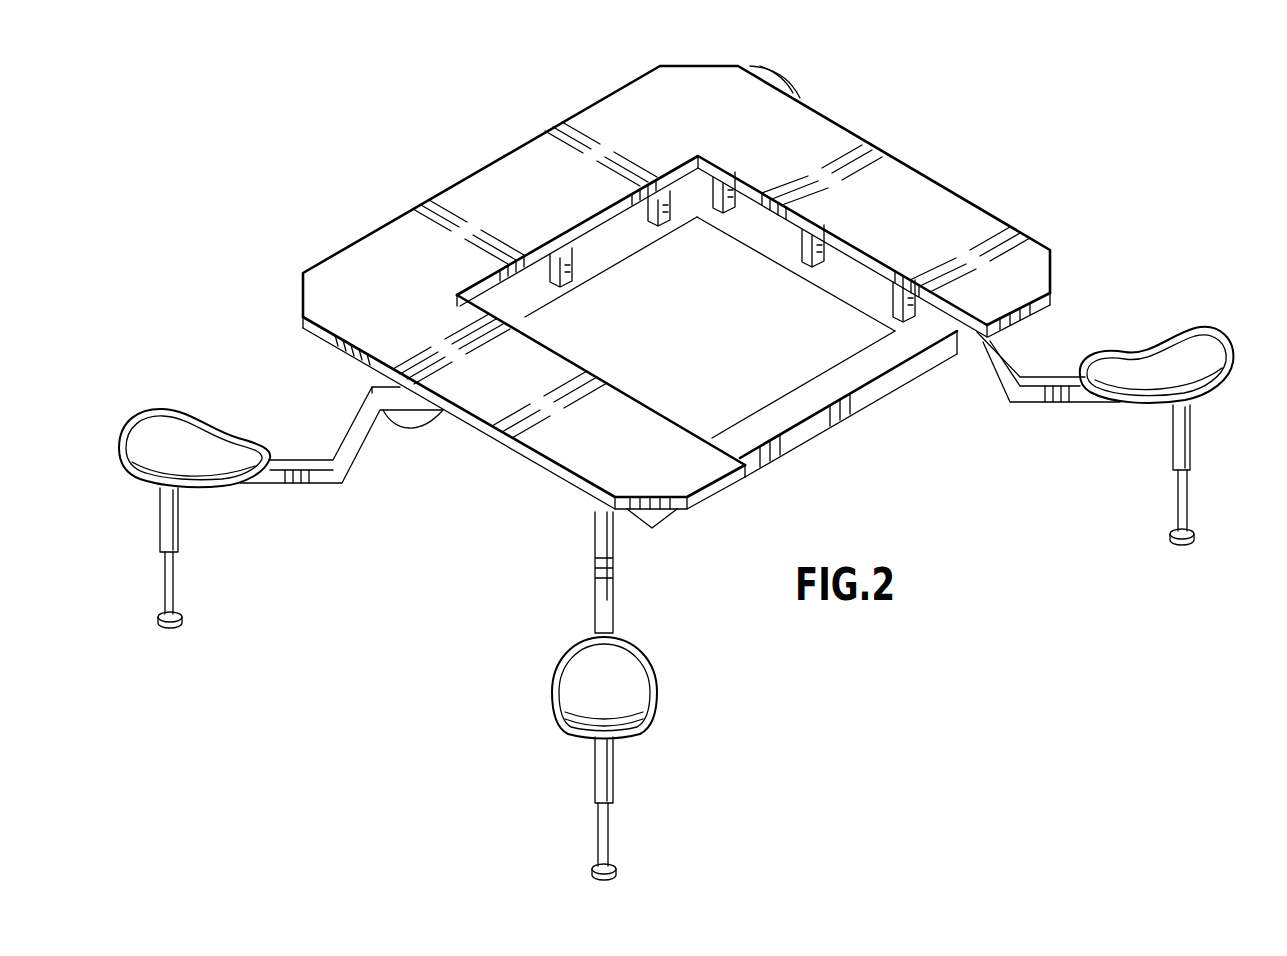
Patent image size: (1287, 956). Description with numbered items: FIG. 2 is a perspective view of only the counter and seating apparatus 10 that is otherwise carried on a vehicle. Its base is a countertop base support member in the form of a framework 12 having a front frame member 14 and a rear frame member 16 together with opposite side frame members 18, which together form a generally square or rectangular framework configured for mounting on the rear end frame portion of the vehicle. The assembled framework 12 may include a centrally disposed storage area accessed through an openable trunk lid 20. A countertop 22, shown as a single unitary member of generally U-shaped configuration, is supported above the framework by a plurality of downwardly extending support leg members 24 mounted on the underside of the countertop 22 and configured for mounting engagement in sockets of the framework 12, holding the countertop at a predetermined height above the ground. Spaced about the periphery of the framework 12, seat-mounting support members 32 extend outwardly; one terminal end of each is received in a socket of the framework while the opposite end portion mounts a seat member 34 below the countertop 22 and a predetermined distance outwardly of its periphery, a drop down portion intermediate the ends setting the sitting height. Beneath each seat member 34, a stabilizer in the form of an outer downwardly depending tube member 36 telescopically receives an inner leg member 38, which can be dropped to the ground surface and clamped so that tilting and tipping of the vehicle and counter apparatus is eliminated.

The table and seating assembly 10 is at (917, 122).
The framework 12 is at (915, 433).
The front frame member 14 is at (820, 400).
The rear frame member 16 is at (607, 257).
The side frame members 18 is at (780, 245).
The trunk lid 20 is at (712, 350).
The countertop 22 is at (500, 172).
The support leg members 24 is at (725, 213).
The seat-mounting support members 32 is at (383, 495).
The seat members 34 is at (160, 406).
The outer downwardly depending tube member 36 is at (180, 521).
The inner leg member 38 is at (173, 596).